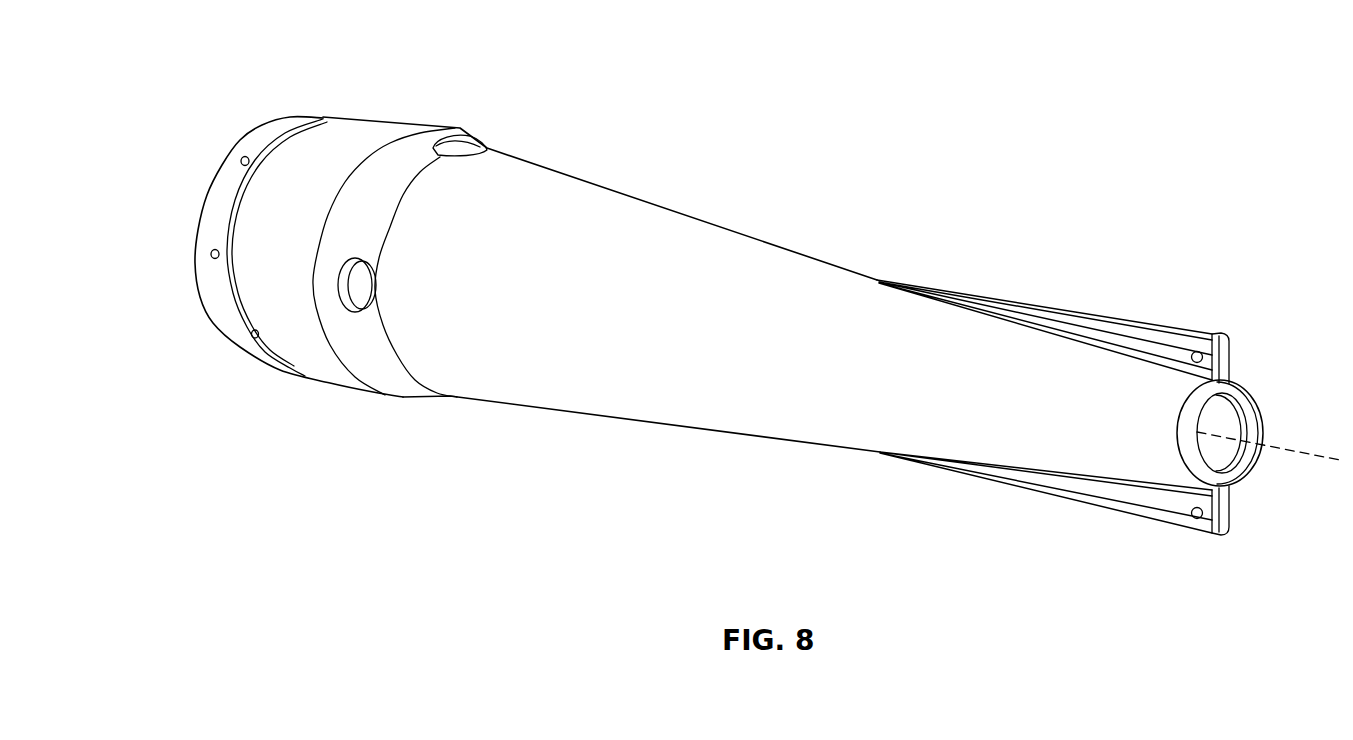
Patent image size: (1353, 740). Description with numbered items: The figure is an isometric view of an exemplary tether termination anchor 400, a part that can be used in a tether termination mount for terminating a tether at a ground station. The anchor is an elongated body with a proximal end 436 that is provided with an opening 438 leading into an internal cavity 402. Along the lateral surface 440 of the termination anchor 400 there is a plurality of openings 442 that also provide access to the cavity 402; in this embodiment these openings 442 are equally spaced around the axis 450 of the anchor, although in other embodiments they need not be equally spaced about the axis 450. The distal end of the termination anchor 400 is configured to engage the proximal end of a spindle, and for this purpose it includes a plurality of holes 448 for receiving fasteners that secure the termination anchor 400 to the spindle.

The termination anchor 400 is at (848, 146).
The cavity 402 is at (1218, 416).
The proximal end 436 is at (1223, 481).
The opening 438 is at (1224, 448).
The lateral surface 440 is at (617, 247).
The plurality of openings 442 is at (458, 148).
The plurality of holes 448 is at (213, 252).
The axis 450 is at (1304, 450).